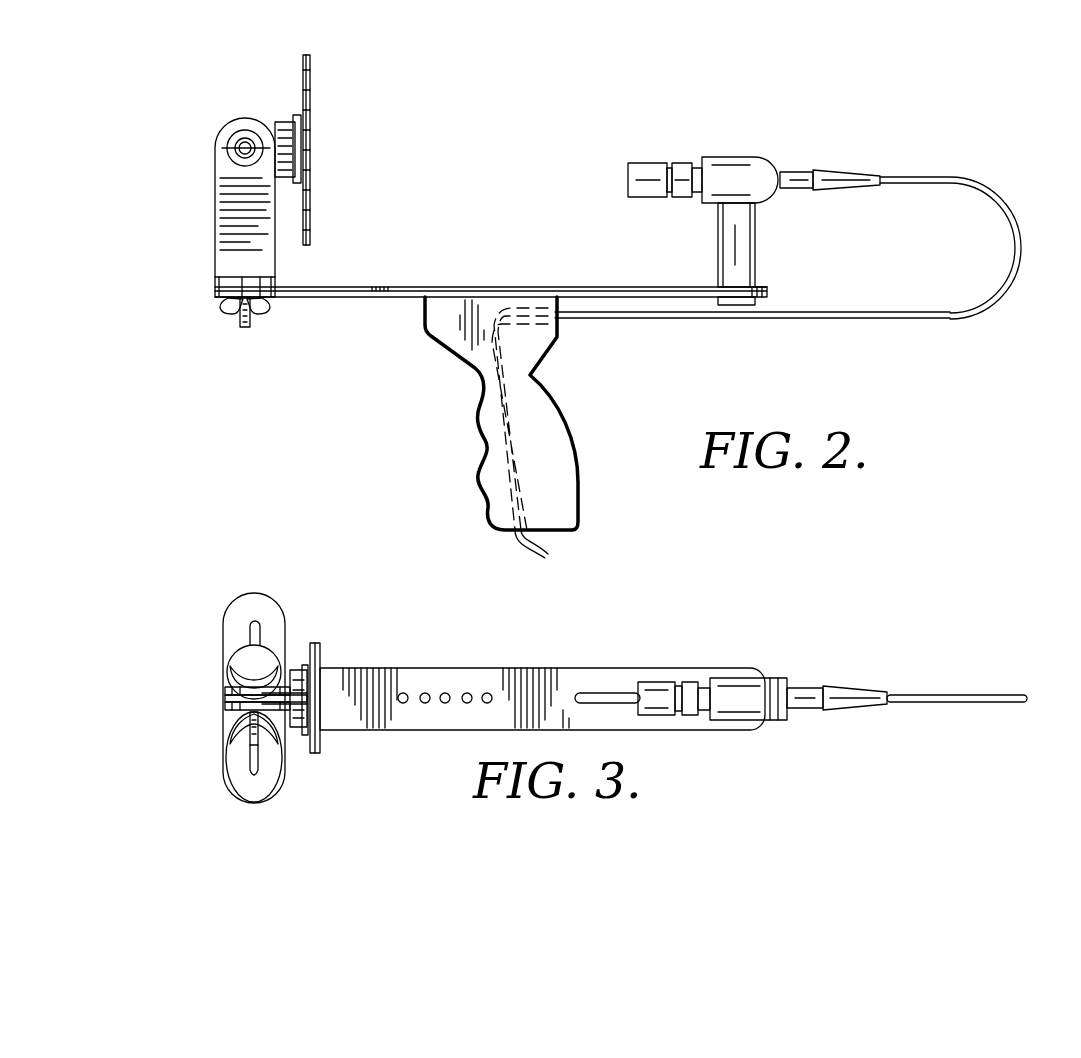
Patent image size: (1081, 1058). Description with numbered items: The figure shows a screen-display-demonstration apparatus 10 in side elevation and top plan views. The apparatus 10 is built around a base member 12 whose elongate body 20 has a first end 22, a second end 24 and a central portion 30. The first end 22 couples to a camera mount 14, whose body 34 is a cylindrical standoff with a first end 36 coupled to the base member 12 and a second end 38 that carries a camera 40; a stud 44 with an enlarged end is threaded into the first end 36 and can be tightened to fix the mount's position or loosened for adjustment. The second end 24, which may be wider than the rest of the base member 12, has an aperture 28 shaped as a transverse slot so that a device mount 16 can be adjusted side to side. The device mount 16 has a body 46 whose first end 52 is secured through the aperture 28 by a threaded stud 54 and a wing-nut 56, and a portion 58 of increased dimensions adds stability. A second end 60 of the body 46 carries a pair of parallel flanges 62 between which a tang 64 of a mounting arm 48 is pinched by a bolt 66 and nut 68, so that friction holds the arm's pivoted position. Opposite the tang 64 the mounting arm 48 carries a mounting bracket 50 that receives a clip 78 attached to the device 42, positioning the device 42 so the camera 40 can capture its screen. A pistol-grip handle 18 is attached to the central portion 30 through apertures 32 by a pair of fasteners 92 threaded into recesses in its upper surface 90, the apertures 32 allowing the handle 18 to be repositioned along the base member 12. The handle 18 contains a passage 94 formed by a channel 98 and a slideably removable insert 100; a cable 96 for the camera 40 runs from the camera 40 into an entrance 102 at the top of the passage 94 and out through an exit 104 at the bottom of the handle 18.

In FIG. 2, the screen-display-demonstration apparatus 10 is at (570, 126).
In FIG. 3, the screen-display-demonstration apparatus 10 is at (850, 618).
In FIG. 2, the base member 12 is at (578, 287).
In FIG. 3, the base member 12 is at (462, 670).
In FIG. 2, the camera mount 14 is at (756, 238).
In FIG. 2, the device mount 16 is at (218, 256).
In FIG. 3, the device mount 16 is at (246, 654).
In FIG. 2, the handle 18 is at (480, 428).
In FIG. 2, the elongate body 20 is at (418, 287).
In FIG. 3, the elongate body 20 is at (517, 730).
In FIG. 2, the first end 22 is at (767, 293).
In FIG. 3, the first end 22 is at (756, 672).
In FIG. 2, the second end 24 is at (216, 295).
In FIG. 3, the second end 24 is at (224, 760).
In FIG. 3, the aperture 28 is at (260, 622).
In FIG. 2, the central portion 30 is at (506, 283).
In FIG. 3, the central portion 30 is at (434, 738).
In FIG. 3, the apertures 32 is at (425, 692).
In FIG. 2, the body 34 is at (756, 264).
In FIG. 2, the first end 36 is at (768, 286).
In FIG. 2, the second end 38 is at (756, 210).
In FIG. 2, the camera 40 is at (742, 157).
In FIG. 3, the camera 40 is at (722, 678).
In FIG. 2, the device 42 is at (308, 56).
In FIG. 3, the device 42 is at (318, 645).
In FIG. 2, the stud 44 is at (738, 305).
In FIG. 2, the body 46 is at (276, 252).
In FIG. 2, the mounting arm 48 is at (270, 125).
In FIG. 2, the mounting bracket 50 is at (285, 122).
In FIG. 3, the mounting bracket 50 is at (296, 730).
In FIG. 2, the first end 52 is at (280, 280).
In FIG. 2, the threaded stud 54 is at (246, 328).
In FIG. 2, the wing-nut 56 is at (264, 312).
In FIG. 2, the portion of increased dimensions 58 is at (218, 278).
In FIG. 3, the portion of increased dimensions 58 is at (240, 666).
In FIG. 2, the second end 60 is at (200, 138).
In FIG. 3, the parallel flanges 62 is at (226, 691).
In FIG. 3, the tang 64 is at (226, 699).
In FIG. 3, the bolt 66 is at (240, 795).
In FIG. 3, the nut 68 is at (286, 792).
In FIG. 2, the clip 78 is at (297, 115).
In FIG. 3, the clip 78 is at (305, 665).
In FIG. 2, the upper surface 90 is at (466, 296).
In FIG. 3, the fasteners 92 is at (486, 704).
In FIG. 2, the passage 94 is at (510, 503).
In FIG. 2, the cable 96 is at (912, 319).
In FIG. 3, the cable 96 is at (992, 695).
In FIG. 2, the channel 98 is at (500, 455).
In FIG. 2, the insert 100 is at (560, 328).
In FIG. 2, the entrance 102 is at (562, 312).
In FIG. 2, the exit 104 is at (520, 538).